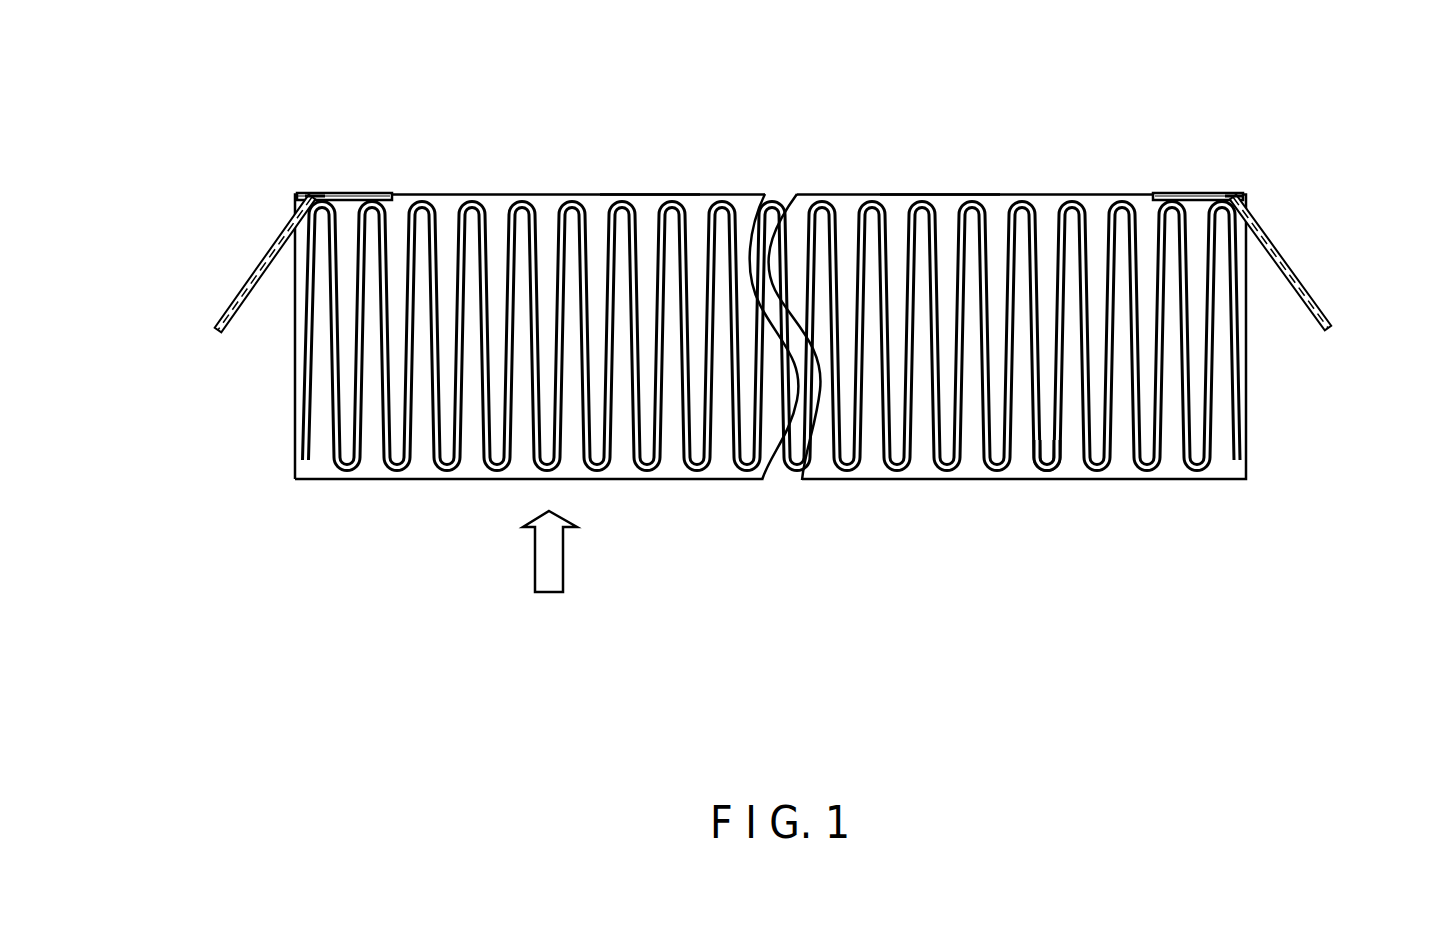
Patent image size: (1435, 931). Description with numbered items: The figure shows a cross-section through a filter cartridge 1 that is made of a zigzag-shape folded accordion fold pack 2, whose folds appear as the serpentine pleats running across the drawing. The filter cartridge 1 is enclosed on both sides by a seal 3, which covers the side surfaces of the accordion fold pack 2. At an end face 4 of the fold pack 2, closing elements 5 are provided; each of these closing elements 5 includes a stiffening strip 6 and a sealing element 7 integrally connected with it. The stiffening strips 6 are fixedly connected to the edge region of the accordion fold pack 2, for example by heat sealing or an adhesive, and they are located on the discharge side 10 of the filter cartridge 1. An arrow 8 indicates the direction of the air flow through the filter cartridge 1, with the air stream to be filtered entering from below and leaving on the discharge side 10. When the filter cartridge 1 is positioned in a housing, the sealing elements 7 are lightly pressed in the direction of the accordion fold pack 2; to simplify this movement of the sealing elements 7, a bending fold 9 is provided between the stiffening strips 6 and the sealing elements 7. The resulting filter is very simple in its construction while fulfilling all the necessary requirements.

The filter cartridge 1 is at (655, 186).
The accordion fold pack 2 is at (988, 222).
The seal 3 is at (1073, 443).
The end face 4 is at (270, 424).
The closing elements 5 is at (222, 195).
The stiffening strips 6 is at (363, 193).
The sealing elements 7 is at (250, 282).
The arrow 8 is at (553, 573).
The bending fold 9 is at (317, 193).
The discharge side 10 is at (940, 193).